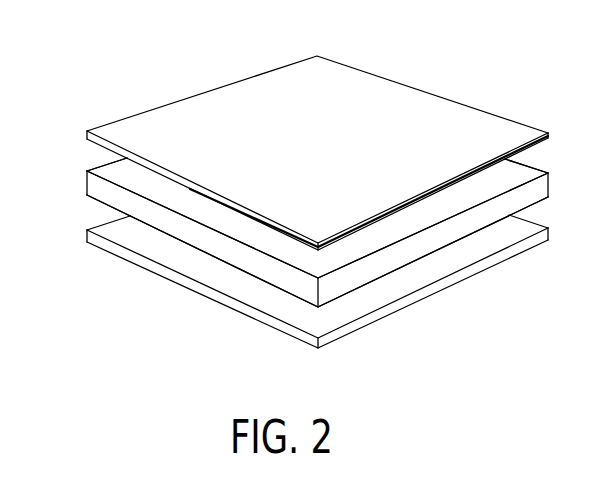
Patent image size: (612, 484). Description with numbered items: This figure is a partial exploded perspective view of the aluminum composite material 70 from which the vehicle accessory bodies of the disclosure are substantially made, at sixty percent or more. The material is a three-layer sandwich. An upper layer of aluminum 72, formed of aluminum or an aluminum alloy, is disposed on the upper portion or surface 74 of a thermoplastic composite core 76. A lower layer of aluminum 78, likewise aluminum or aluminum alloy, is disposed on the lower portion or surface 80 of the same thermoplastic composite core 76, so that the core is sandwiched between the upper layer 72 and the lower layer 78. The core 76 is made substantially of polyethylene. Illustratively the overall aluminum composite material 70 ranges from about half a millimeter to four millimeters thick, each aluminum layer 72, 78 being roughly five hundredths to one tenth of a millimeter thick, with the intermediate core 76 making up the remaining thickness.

The aluminum composite material 70 is at (85, 80).
The upper layer of aluminum 72 is at (454, 102).
The upper portion or surface 74 is at (518, 168).
The thermoplastic composite core 76 is at (539, 187).
The lower layer of aluminum 78 is at (218, 305).
The lower portion or surface 80 is at (467, 237).